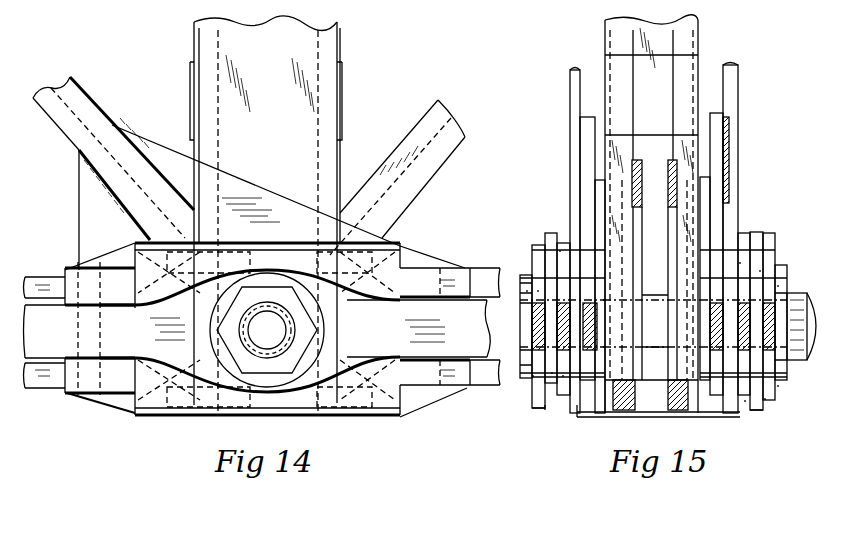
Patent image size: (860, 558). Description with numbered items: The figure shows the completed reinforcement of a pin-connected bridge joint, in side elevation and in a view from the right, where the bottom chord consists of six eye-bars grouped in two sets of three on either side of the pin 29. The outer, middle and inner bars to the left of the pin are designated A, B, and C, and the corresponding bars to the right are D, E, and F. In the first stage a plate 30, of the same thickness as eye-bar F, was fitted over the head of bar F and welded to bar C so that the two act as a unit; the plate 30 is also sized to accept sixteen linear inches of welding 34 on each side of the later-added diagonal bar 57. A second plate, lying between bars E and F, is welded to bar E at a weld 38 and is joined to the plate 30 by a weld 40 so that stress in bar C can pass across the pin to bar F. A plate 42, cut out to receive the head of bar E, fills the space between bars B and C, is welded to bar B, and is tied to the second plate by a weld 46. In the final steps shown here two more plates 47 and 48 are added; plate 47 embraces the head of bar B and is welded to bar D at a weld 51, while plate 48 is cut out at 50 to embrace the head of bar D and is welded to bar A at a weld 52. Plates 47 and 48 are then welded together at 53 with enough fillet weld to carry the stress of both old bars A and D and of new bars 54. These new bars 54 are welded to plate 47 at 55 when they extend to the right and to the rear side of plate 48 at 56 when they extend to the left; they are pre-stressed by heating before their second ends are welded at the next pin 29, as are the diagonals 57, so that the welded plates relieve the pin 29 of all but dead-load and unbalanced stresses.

In FIG. 14, the pin 29 is at (265, 340).
In FIG. 15, the pin 29 is at (800, 360).
In FIG. 14, the plate 30 is at (78, 205).
In FIG. 14, the welding 34 is at (140, 148).
In FIG. 15, the weld 38 is at (540, 400).
In FIG. 15, the weld 40 is at (576, 215).
In FIG. 14, the plate 42 is at (178, 415).
In FIG. 15, the weld 46 is at (586, 240).
In FIG. 14, the plate 47 is at (432, 262).
In FIG. 15, the plate 47 is at (545, 240).
In FIG. 14, the plate 48 is at (116, 412).
In FIG. 15, the plate 48 is at (541, 410).
In FIG. 14, the cutout 50 is at (431, 239).
In FIG. 14, the weld 51 is at (365, 304).
In FIG. 15, the weld 51 is at (523, 323).
In FIG. 14, the weld 52 is at (130, 304).
In FIG. 14, the weld 53 is at (263, 240).
In FIG. 15, the weld 53 is at (550, 258).
In FIG. 14, the new bars 54 is at (37, 278).
In FIG. 15, the new bars 54 is at (530, 285).
In FIG. 14, the weld 55 is at (80, 262).
In FIG. 15, the weld 55 is at (540, 272).
In FIG. 14, the weld 56 is at (100, 268).
In FIG. 15, the weld 56 is at (530, 300).
In FIG. 14, the diagonal bar 57 is at (82, 97).
In FIG. 15, the outer eye-bar A is at (527, 290).
In FIG. 15, the middle eye-bar B is at (538, 290).
In FIG. 15, the inner eye-bar C is at (560, 250).
In FIG. 15, the outer eye-bar D is at (533, 375).
In FIG. 15, the middle eye-bar E is at (552, 372).
In FIG. 15, the inner eye-bar F is at (563, 375).